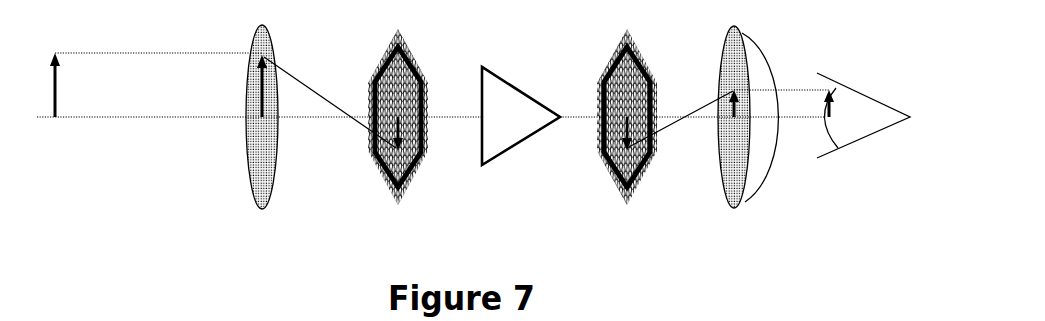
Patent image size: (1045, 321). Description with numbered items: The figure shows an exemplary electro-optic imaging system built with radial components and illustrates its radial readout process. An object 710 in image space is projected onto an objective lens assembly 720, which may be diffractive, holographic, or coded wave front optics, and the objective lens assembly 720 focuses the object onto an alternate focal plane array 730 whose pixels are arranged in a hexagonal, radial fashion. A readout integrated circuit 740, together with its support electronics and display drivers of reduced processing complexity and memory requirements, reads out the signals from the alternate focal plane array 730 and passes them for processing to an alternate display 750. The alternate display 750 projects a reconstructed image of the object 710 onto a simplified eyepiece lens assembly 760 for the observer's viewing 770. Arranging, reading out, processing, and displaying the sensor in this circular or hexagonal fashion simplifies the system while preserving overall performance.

The object 710 is at (58, 98).
The objective lens assembly 720 is at (275, 177).
The alternate focal plane array 730 is at (415, 180).
The readout integrated circuit 740 is at (523, 147).
The alternate display 750 is at (640, 180).
The eyepiece lens assembly 760 is at (758, 172).
The observer's viewing 770 is at (855, 147).